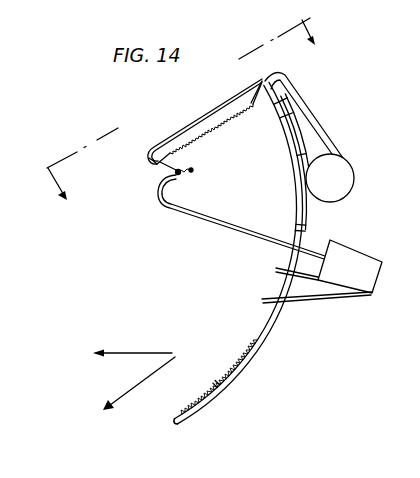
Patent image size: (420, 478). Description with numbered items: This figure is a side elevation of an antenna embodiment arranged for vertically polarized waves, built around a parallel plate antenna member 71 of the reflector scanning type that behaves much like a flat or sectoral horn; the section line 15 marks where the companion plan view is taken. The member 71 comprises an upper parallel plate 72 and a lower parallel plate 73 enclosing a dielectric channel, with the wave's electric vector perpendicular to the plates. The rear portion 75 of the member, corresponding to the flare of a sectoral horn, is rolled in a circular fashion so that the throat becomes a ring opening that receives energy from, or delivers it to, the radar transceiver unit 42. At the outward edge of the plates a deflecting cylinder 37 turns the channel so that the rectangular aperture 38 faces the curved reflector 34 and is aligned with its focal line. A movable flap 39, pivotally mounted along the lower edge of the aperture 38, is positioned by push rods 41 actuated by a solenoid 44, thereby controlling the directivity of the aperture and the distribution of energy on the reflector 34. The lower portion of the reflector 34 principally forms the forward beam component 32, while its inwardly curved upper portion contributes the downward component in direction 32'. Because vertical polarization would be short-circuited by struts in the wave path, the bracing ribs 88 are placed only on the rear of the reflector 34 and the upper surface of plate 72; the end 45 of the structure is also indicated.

The section line for FIG. 15 is at (192, 116).
The forward component 32 is at (132, 346).
The downward direction 32' is at (139, 392).
The curved reflector 34 is at (305, 224).
The deflecting cylinder 37 is at (149, 158).
The rectangular aperture 38 is at (173, 162).
The movable flap 39 is at (192, 169).
The push rods 41 is at (205, 222).
The radar transceiver unit 42 is at (355, 186).
The solenoid 44 is at (372, 288).
The lower end of rail 45 is at (172, 423).
The parallel plate antenna member 71 is at (264, 82).
The upper parallel plate 72 is at (211, 109).
The lower parallel plate 73 is at (254, 110).
The rear portion 75 is at (322, 131).
The bracing ribs 88 is at (264, 311).